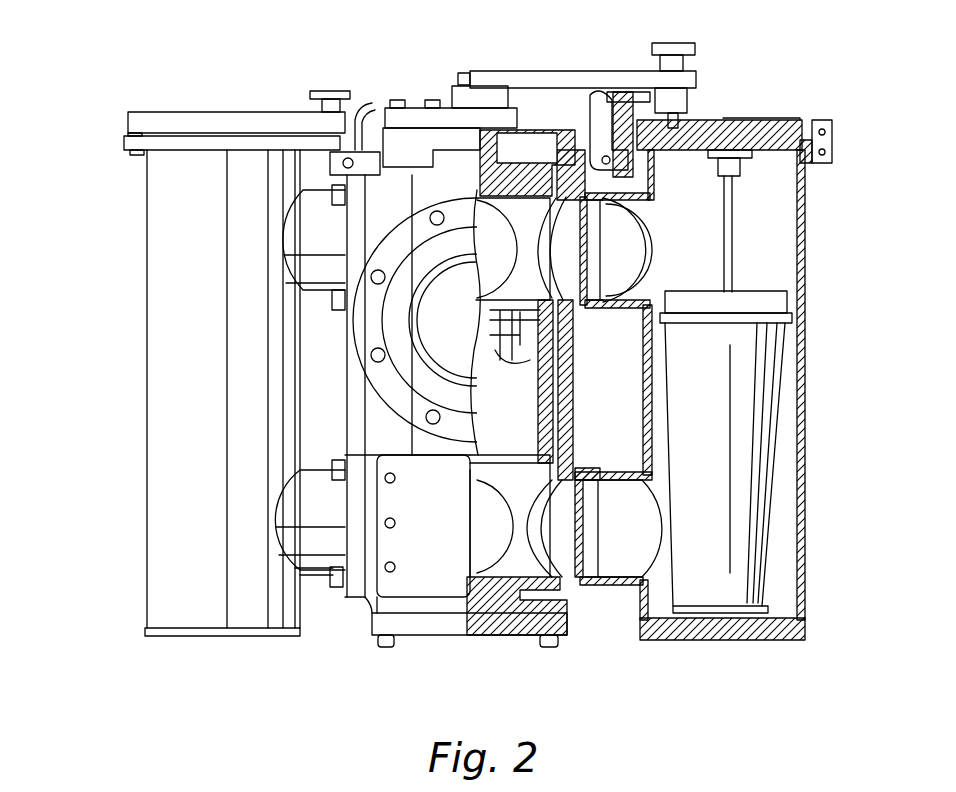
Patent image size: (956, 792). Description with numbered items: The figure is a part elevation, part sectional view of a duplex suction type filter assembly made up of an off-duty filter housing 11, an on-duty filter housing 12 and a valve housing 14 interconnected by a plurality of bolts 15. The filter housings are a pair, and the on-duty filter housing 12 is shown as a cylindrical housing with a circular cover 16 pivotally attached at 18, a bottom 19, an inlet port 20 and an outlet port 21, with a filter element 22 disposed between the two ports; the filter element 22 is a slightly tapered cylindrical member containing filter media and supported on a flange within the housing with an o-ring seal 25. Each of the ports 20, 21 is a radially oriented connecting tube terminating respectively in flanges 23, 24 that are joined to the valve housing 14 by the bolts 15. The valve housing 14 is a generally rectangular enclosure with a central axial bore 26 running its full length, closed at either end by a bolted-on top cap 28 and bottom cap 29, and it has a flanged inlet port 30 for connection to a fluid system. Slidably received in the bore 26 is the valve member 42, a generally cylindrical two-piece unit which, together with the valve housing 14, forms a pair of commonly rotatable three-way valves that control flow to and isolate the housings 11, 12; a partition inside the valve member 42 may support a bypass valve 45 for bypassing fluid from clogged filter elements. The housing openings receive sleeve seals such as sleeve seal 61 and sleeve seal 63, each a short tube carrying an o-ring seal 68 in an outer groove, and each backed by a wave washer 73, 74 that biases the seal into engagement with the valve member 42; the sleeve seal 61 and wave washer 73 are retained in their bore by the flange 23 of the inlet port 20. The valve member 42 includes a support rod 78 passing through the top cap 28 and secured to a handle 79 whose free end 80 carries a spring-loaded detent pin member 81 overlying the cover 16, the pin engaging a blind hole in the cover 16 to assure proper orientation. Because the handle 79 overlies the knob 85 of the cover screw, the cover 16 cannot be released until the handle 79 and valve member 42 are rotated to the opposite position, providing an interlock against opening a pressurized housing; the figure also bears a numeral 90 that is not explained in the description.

The off-duty filter housing 11 is at (147, 248).
The on-duty filter housing 12 is at (808, 245).
The valve housing 14 is at (368, 610).
The bolts 15 is at (332, 587).
The circular cover 16 is at (760, 120).
The pivotal attachment 18 is at (835, 138).
The bottom 19 is at (775, 642).
The inlet port 20 is at (660, 245).
The outlet port 21 is at (665, 540).
The filter element 22 is at (775, 475).
The flange 23 is at (628, 205).
The flange 24 is at (590, 468).
The o-ring seal 25 is at (760, 318).
The central axial bore 26 is at (535, 145).
The top cap 28 is at (415, 140).
The bottom cap 29 is at (445, 630).
The inlet port 30 is at (440, 342).
The valve member 42 is at (523, 592).
The bypass valve 45 is at (508, 352).
The sleeve seal 61 is at (575, 285).
The sleeve seal 63 is at (565, 570).
The o-ring seal 68 is at (572, 300).
The wave washer 73 is at (592, 232).
The wave washer 74 is at (582, 505).
The support rod 78 is at (448, 130).
The handle 79 is at (495, 71).
The free end 80 is at (695, 84).
The spring-loaded detent pin member 81 is at (682, 42).
The knob 85 is at (610, 92).
The hook 90 is at (423, 118).